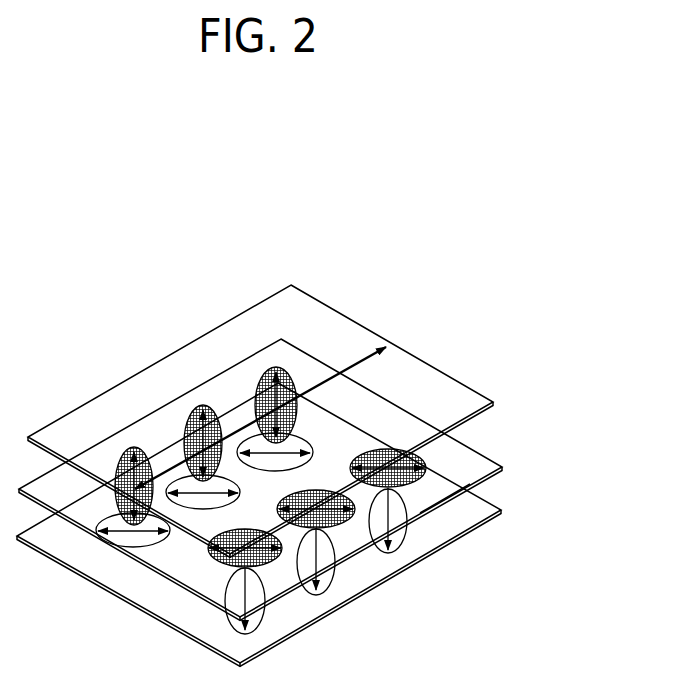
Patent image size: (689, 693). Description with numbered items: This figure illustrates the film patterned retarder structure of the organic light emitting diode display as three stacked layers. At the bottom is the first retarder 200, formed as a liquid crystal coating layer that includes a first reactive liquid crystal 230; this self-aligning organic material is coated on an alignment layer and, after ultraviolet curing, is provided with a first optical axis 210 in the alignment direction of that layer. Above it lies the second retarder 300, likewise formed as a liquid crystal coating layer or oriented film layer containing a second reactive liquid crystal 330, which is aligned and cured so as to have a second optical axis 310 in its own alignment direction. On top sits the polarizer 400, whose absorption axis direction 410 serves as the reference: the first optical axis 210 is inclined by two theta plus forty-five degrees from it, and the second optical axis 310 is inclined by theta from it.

The first retarder 200 is at (462, 527).
The first optical axis 210 is at (335, 570).
The first reactive liquid crystal 230 is at (400, 545).
The second retarder 300 is at (477, 468).
The second optical axis 310 is at (413, 455).
The second reactive liquid crystal 330 is at (458, 502).
The polarizer 400 is at (462, 383).
The absorption axis direction 410 is at (363, 357).